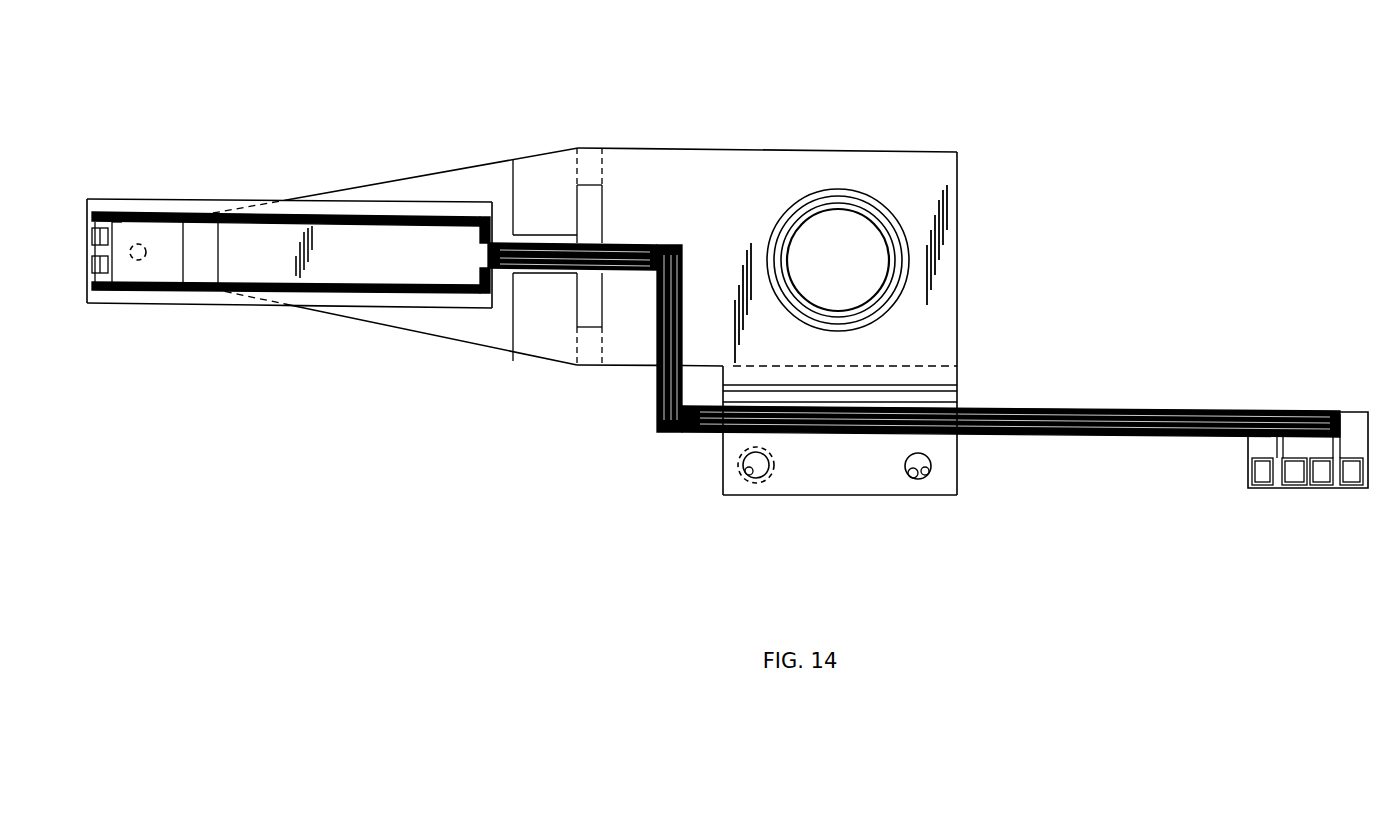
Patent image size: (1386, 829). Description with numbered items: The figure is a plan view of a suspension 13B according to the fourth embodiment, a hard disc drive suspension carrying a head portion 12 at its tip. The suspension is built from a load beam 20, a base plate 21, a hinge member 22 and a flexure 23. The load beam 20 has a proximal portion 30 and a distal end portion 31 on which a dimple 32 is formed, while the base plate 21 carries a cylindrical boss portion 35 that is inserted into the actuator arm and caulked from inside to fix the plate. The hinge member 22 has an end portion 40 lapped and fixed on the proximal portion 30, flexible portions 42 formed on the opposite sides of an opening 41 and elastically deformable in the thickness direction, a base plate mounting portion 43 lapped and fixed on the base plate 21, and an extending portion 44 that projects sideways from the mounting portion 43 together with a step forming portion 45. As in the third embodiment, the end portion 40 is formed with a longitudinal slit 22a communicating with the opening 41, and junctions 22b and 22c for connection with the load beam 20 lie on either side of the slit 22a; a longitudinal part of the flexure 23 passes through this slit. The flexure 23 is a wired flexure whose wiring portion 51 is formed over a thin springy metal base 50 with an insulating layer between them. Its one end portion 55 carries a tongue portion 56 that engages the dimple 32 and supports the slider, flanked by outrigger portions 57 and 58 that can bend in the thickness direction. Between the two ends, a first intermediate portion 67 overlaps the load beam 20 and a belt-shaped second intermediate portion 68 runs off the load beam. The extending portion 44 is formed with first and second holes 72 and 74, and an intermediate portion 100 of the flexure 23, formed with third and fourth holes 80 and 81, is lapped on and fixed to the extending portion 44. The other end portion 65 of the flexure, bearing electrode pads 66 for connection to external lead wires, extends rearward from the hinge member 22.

The suspension 13B is at (419, 114).
The head portion 12 is at (112, 312).
The load beam 20 is at (393, 180).
The base plate 21 is at (808, 150).
The hinge member 22 is at (644, 144).
The slit 22a is at (546, 237).
The junction 22b is at (508, 167).
The junction 22c is at (512, 340).
The flexure 23 is at (463, 318).
The proximal portion 30 is at (541, 163).
The distal end portion 31 is at (128, 228).
The dimple 32 is at (138, 260).
The boss portion 35 is at (790, 245).
The end portion 40 is at (540, 353).
The opening 41 is at (600, 206).
The flexible portion 42 is at (592, 150).
The base plate mounting portion 43 is at (876, 152).
The extending portion 44 is at (722, 474).
The step forming portion 45 is at (721, 378).
The metal base 50 is at (400, 304).
The wiring portion 51 is at (330, 215).
The end portion 55 is at (85, 250).
The tongue portion 56 is at (168, 275).
The outrigger portion 57 is at (170, 203).
The outrigger portion 58 is at (205, 298).
The end portion 65 is at (1350, 490).
The electrode pads 66 is at (1268, 480).
The first intermediate portion 67 is at (352, 306).
The second intermediate portion 68 is at (656, 410).
The first hole 72 is at (924, 480).
The second hole 74 is at (772, 483).
The third hole 80 is at (910, 482).
The fourth hole 81 is at (752, 480).
The intermediate portion 100 is at (840, 497).